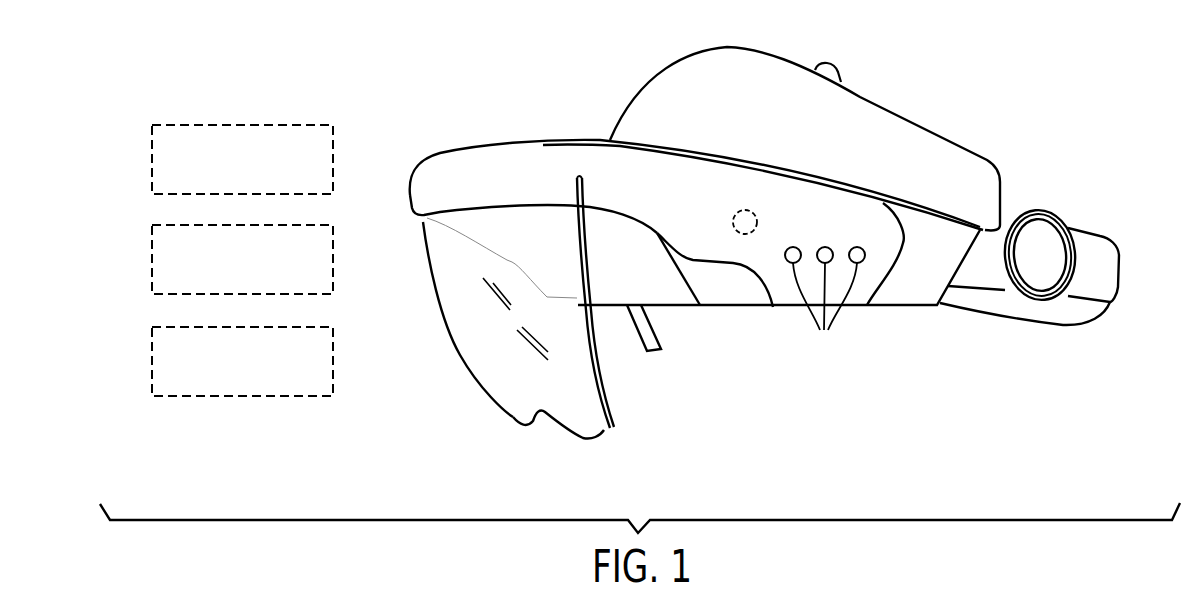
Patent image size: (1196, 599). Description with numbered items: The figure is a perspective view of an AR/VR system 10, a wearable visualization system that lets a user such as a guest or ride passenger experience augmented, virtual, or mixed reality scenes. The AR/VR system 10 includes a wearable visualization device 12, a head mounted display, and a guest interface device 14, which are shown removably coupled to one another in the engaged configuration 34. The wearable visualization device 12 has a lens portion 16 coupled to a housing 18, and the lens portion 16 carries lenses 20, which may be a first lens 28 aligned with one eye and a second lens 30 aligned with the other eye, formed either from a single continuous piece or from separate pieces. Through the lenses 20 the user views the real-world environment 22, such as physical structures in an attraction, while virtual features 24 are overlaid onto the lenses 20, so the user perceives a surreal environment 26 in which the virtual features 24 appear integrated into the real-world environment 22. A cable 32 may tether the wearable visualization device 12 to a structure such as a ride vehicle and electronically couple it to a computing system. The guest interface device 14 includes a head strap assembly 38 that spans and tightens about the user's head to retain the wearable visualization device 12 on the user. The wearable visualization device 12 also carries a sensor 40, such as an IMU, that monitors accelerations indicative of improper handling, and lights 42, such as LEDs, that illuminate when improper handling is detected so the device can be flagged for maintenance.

The AR/VR system 10 is at (495, 38).
The wearable visualization device 12 is at (485, 148).
The guest interface device 14 is at (973, 312).
The lens portion 16 is at (443, 338).
The housing 18 is at (543, 145).
The lenses 20 is at (510, 407).
The real-world environment 22 is at (152, 159).
The virtual features 24 is at (152, 259).
The surreal environment 26 is at (152, 361).
The first lens 28 is at (603, 432).
The second lens 30 is at (490, 380).
The cable 32 is at (663, 328).
The engaged configuration 34 is at (905, 355).
The head strap assembly 38 is at (1093, 217).
The sensor 40 is at (745, 210).
The lights 42 is at (825, 305).